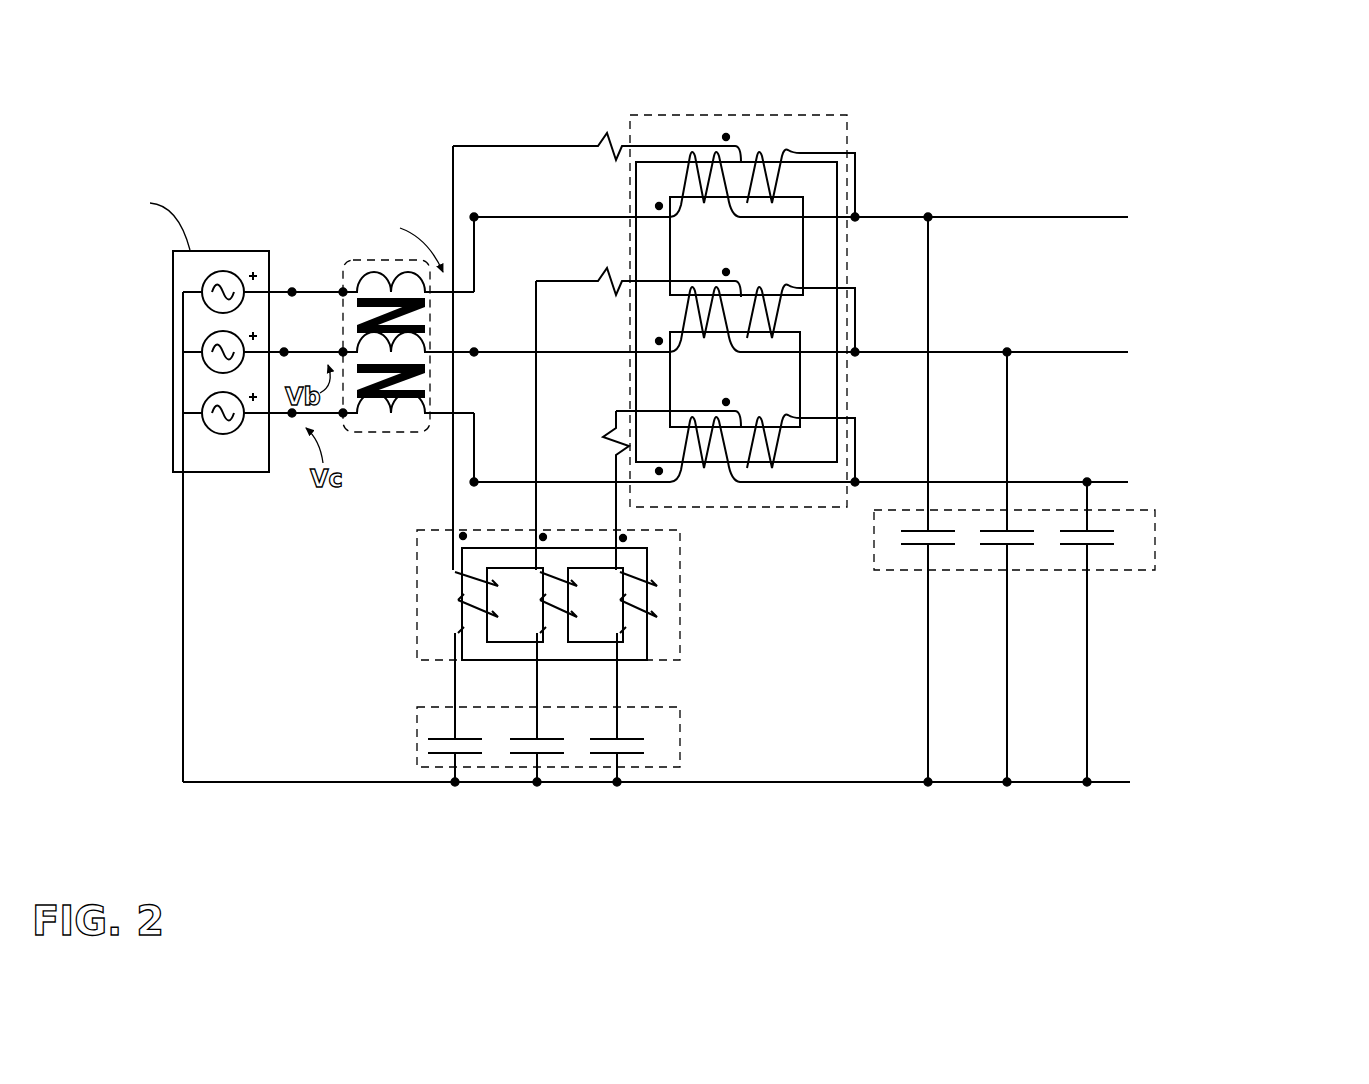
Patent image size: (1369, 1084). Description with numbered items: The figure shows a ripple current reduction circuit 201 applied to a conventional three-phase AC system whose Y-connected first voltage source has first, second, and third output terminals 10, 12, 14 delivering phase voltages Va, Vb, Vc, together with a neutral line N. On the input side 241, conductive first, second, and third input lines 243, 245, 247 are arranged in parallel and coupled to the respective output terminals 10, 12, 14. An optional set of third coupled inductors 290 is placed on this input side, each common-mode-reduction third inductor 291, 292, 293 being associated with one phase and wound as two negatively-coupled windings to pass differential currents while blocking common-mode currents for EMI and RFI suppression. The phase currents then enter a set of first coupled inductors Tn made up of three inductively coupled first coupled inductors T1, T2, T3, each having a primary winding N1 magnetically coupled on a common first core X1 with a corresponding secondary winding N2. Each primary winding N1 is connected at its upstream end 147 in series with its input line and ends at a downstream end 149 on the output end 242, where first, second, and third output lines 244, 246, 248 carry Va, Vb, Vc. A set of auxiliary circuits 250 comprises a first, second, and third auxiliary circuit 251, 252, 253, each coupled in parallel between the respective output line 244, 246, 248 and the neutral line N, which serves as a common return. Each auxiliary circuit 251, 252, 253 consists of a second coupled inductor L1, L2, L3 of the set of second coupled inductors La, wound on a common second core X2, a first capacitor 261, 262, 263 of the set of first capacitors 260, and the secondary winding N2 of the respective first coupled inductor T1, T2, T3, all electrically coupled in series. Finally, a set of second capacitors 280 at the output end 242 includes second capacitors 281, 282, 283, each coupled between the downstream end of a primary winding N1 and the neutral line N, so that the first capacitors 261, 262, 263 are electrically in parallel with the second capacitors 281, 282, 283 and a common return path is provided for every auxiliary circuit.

The ripple current reduction circuit 201 is at (413, 110).
The input side 241 is at (280, 203).
The first output terminal 10 is at (292, 288).
The second output terminal 12 is at (284, 348).
The third output terminal 14 is at (292, 418).
The set of third coupled inductors 290 is at (481, 338).
The third inductor 291 is at (387, 262).
The third inductor 292 is at (444, 326).
The third inductor 293 is at (399, 430).
The first input line 243 is at (470, 215).
The second input line 245 is at (437, 355).
The third input line 247 is at (470, 456).
The upstream end 147 is at (544, 192).
The first auxiliary circuit 251 is at (438, 499).
The second auxiliary circuit 252 is at (573, 272).
The third auxiliary circuit 253 is at (634, 517).
The set of first coupled inductors Tn is at (853, 143).
The first coupled inductor T1 is at (760, 116).
The first coupled inductor T2 is at (812, 318).
The first coupled inductor T3 is at (770, 488).
The primary winding N1 is at (732, 147).
The secondary winding N2 is at (775, 151).
The first core X1 is at (660, 186).
The first output line 244 is at (1046, 217).
The second output line 246 is at (1073, 352).
The third output line 248 is at (1092, 478).
The downstream end 149 is at (920, 187).
The output end 242 is at (1272, 318).
The set of second capacitors 280 is at (1047, 501).
The second capacitor 281 is at (912, 548).
The second capacitor 282 is at (1000, 548).
The second capacitor 283 is at (1097, 548).
The neutral line N is at (186, 705).
The set of auxiliary circuits 250 is at (515, 585).
The second coupled inductor L1 is at (438, 582).
The second coupled inductor L2 is at (521, 553).
The second coupled inductor L3 is at (683, 583).
The set of second coupled inductors La is at (685, 610).
The second core X2 is at (645, 636).
The set of first capacitors 260 is at (517, 709).
The first capacitor 261 is at (470, 737).
The first capacitor 262 is at (545, 737).
The first capacitor 263 is at (650, 737).